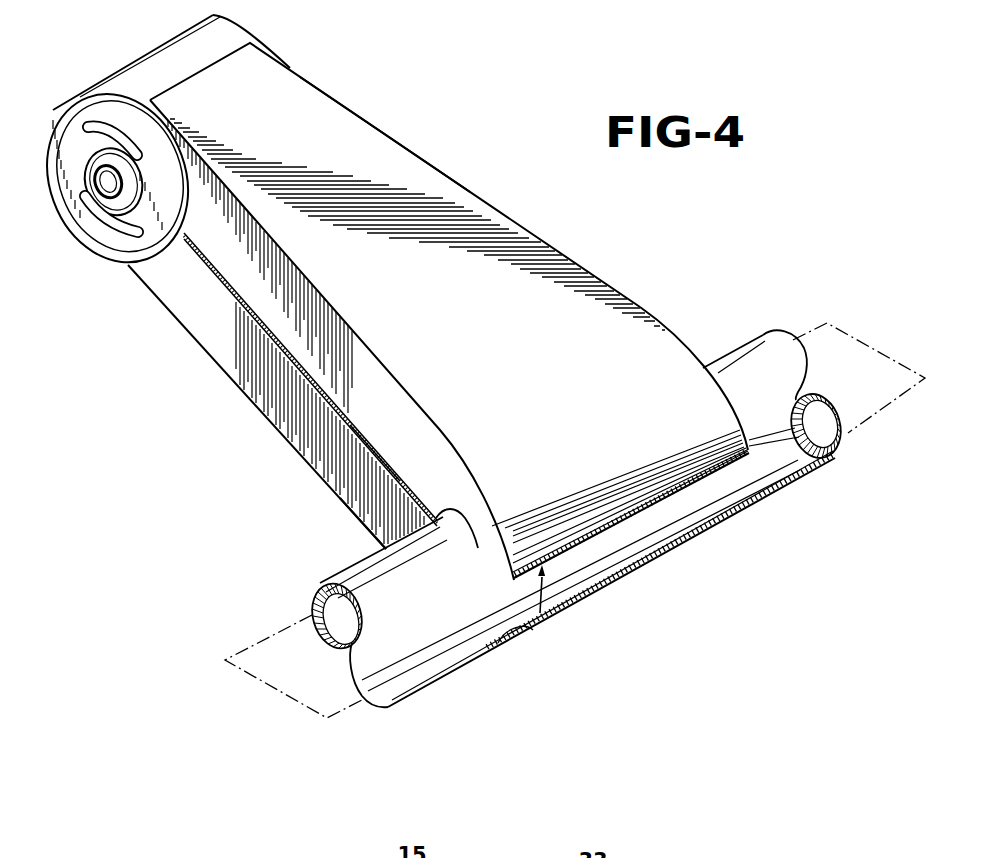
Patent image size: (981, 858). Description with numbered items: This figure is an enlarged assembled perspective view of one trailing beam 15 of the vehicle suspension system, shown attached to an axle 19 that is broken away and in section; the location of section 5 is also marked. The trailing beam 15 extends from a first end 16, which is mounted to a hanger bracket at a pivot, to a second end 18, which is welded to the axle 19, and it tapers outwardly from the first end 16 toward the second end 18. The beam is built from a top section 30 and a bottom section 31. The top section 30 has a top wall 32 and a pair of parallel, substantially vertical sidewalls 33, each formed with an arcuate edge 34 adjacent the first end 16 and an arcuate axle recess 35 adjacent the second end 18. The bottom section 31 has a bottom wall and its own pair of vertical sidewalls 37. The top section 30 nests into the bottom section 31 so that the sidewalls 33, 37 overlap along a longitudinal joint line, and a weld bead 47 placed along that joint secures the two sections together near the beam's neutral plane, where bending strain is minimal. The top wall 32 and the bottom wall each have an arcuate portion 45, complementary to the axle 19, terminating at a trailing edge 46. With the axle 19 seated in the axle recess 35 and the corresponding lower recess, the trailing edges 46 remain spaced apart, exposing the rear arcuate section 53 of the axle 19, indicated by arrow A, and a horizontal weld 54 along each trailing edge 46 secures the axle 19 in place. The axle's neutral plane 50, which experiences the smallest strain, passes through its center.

The trailing beam 15 is at (400, 134).
The first end 16 is at (262, 50).
The second end 18 is at (722, 380).
The axle 19 is at (780, 355).
The top section 30 is at (340, 97).
The bottom section 31 is at (193, 340).
The top wall 32 is at (417, 172).
The sidewall 33 is at (237, 268).
The arcuate edge 34 is at (183, 170).
The arcuate axle recess 35 is at (495, 545).
The sidewall 37 is at (376, 497).
The arcuate portion 45 is at (623, 497).
The trailing edge 46 is at (667, 490).
The weld bead 47 is at (372, 447).
The neutral plane 50 is at (252, 657).
The rear arcuate section 53 is at (595, 570).
The horizontal weld 54 is at (737, 453).
The section line 5- 5 is at (507, 200).
The arrow A is at (543, 613).